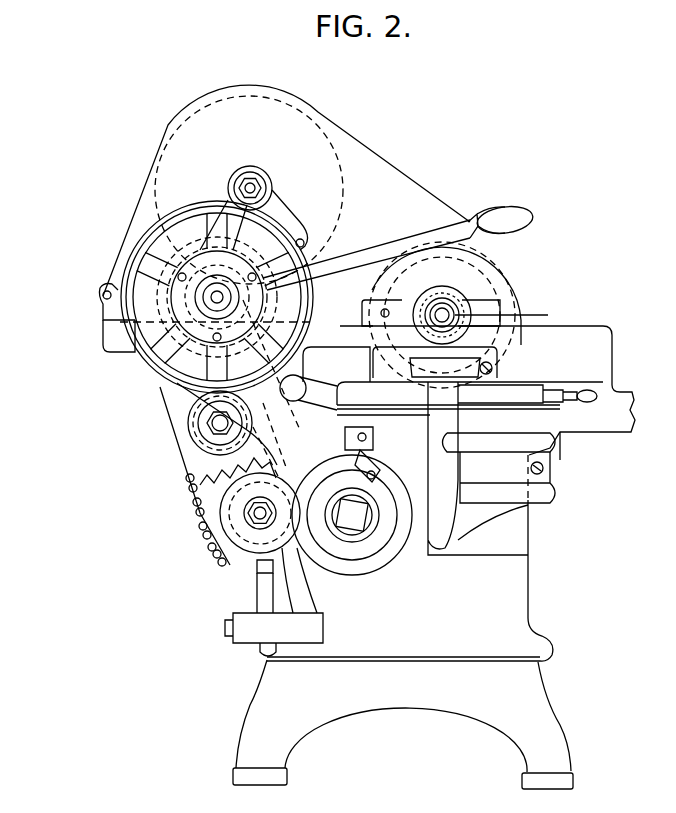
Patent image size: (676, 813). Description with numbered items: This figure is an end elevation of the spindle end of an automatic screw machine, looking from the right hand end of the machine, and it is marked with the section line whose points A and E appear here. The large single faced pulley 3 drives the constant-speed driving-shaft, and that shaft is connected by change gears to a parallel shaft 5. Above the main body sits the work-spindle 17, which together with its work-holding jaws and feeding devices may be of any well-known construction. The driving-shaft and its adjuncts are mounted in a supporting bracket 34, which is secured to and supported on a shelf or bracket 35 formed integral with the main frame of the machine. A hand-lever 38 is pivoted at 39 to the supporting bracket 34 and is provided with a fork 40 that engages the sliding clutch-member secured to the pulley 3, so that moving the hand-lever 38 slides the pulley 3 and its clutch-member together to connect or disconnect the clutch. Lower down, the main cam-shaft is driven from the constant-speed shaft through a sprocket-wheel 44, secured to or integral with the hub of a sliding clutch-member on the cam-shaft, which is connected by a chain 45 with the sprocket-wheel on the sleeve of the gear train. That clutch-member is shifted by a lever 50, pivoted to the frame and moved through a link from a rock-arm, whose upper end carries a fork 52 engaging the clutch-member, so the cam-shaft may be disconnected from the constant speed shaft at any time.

The pulley 3 is at (150, 361).
The parallel shaft 5 is at (257, 186).
The work-spindle 17 is at (447, 308).
The supporting bracket 34 is at (113, 315).
The shelf or bracket 35 is at (115, 335).
The hand-lever 38 is at (522, 212).
The pivot 39 is at (235, 251).
The fork 40 is at (195, 243).
The sprocket-wheel 44 is at (241, 546).
The chain 45 is at (188, 481).
The lever 50 is at (294, 586).
The fork 52 is at (241, 560).
The section line point A is at (212, 300).
The section line point E is at (508, 316).